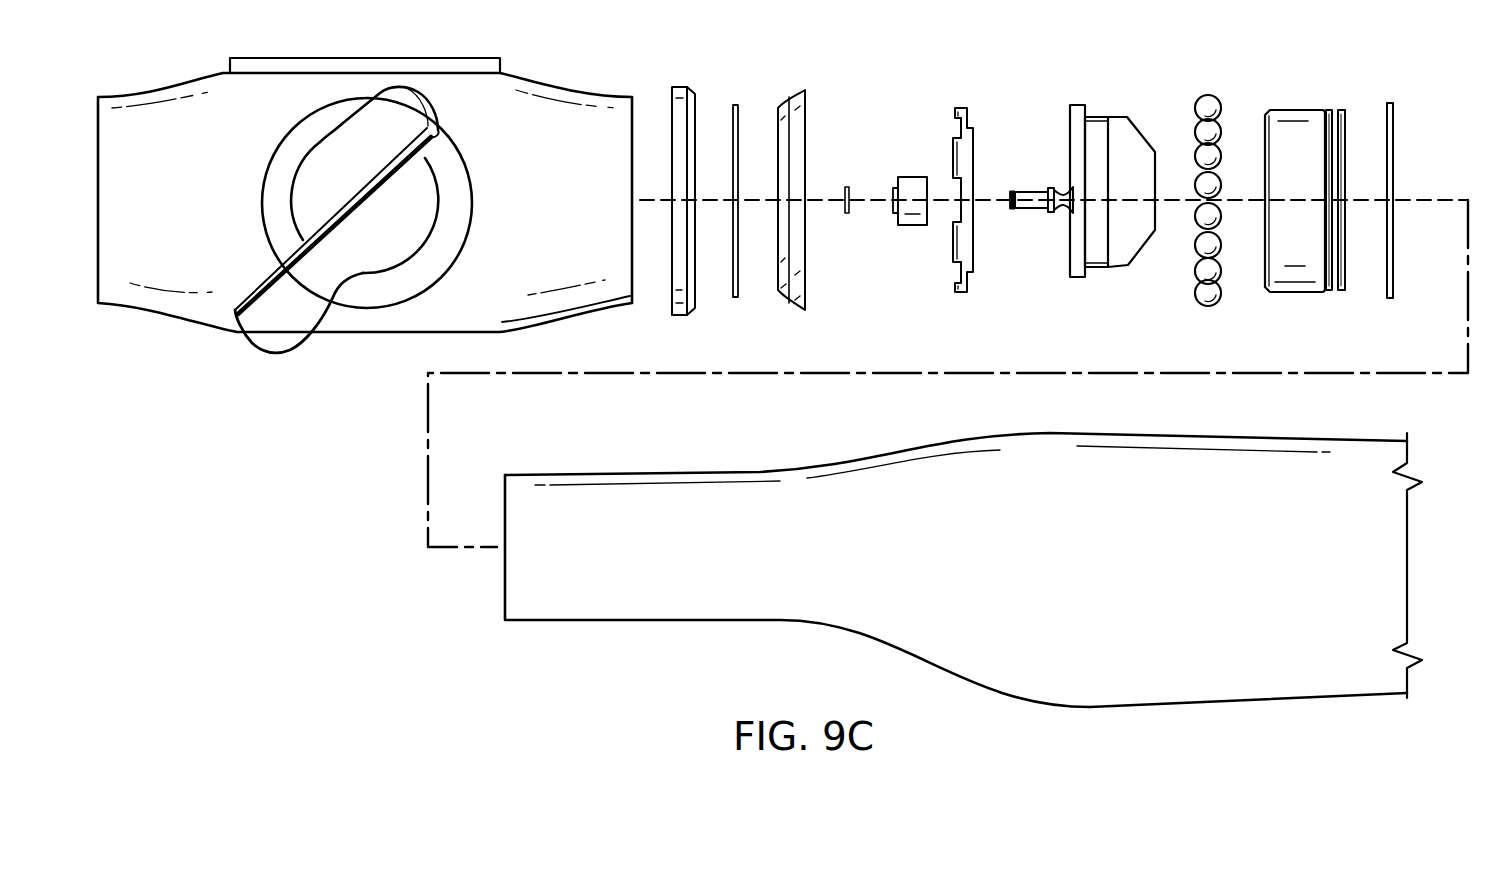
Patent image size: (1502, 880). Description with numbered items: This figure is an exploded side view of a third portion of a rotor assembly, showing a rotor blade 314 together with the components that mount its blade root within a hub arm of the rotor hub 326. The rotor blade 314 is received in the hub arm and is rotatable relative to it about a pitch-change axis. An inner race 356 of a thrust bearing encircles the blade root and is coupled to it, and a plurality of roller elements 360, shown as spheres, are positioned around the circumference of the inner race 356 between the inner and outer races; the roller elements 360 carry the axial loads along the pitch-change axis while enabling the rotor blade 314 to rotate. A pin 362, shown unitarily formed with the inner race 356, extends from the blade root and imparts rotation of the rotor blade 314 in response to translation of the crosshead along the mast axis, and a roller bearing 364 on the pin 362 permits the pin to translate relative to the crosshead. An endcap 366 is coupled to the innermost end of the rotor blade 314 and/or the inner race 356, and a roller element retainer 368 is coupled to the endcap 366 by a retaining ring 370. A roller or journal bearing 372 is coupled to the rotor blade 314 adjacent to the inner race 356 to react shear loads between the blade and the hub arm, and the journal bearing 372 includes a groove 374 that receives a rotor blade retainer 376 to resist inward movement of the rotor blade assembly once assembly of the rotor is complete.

The rotor blade 314 is at (269, 355).
The rotor hub 326 is at (176, 91).
The inner race 356 is at (1118, 117).
The roller elements 360 is at (1205, 97).
The pin 362 is at (1032, 192).
The roller bearing 364 is at (912, 177).
The endcap 366 is at (962, 108).
The roller element retainer 368 is at (797, 93).
The retaining ring 370 is at (735, 105).
The journal bearing 372 is at (1288, 110).
The groove 374 is at (1340, 110).
The rotor blade retainer 376 is at (1393, 103).